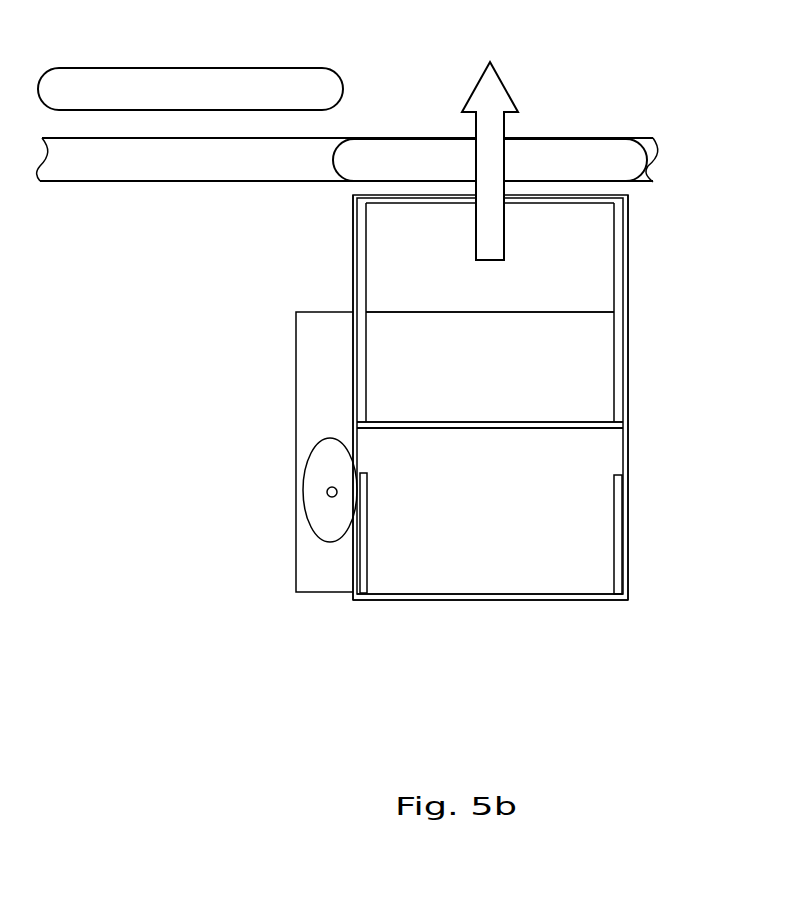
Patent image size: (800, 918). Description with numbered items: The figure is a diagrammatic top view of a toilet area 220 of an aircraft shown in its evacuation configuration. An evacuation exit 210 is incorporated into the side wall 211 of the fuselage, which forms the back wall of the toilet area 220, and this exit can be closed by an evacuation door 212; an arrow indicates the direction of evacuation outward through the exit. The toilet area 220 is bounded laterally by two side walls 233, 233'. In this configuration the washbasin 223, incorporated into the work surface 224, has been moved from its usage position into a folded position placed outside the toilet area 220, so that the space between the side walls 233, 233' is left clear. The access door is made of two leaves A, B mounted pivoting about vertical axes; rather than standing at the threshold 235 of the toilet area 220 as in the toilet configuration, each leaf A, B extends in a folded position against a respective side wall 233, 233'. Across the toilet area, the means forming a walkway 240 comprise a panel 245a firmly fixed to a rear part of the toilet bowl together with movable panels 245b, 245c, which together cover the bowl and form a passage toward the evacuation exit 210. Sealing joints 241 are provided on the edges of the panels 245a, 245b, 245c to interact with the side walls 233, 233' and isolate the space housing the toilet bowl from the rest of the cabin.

The evacuation door 212 is at (210, 86).
The side wall 211 is at (194, 166).
The evacuation exit 210 is at (578, 142).
The toilet area 220 is at (697, 403).
The sealing joints 241 is at (365, 213).
The side wall 233 is at (310, 397).
The side wall 233' is at (673, 397).
The panel 245a is at (597, 292).
The movable panel 245b is at (597, 340).
The movable panel 245c is at (617, 428).
The walkway 240 is at (606, 445).
The work surface 224 is at (314, 350).
The washbasin 223 is at (318, 492).
The threshold 235 is at (502, 602).
The leaf A is at (358, 561).
The leaf B is at (617, 531).